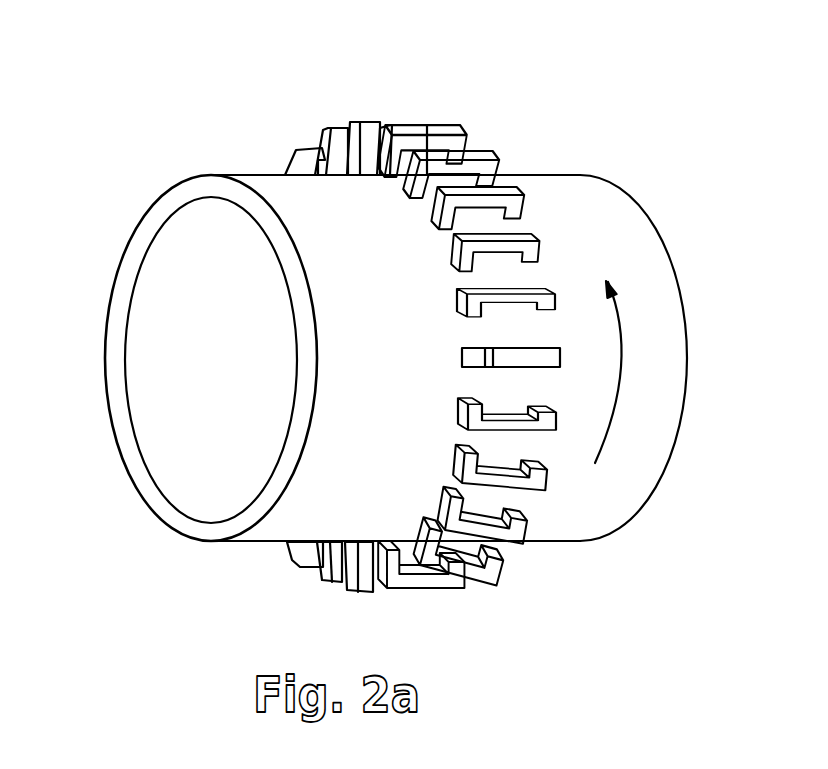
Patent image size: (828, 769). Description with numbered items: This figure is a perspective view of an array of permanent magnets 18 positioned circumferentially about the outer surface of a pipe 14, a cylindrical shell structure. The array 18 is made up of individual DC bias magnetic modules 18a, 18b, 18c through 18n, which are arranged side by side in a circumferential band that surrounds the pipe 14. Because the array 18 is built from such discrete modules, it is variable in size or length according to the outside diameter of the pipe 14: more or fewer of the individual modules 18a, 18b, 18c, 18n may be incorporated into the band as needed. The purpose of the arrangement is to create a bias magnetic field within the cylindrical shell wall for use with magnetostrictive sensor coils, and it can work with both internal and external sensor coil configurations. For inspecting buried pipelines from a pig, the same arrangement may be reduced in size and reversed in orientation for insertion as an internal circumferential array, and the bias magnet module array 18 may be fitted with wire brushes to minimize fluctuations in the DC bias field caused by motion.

The pipe 14 is at (404, 365).
The array of permanent magnets 18 is at (296, 130).
The magnetic module 18a is at (512, 510).
The magnetic module 18b is at (547, 460).
The magnetic module 18c is at (555, 418).
The magnetic module 18n is at (477, 548).